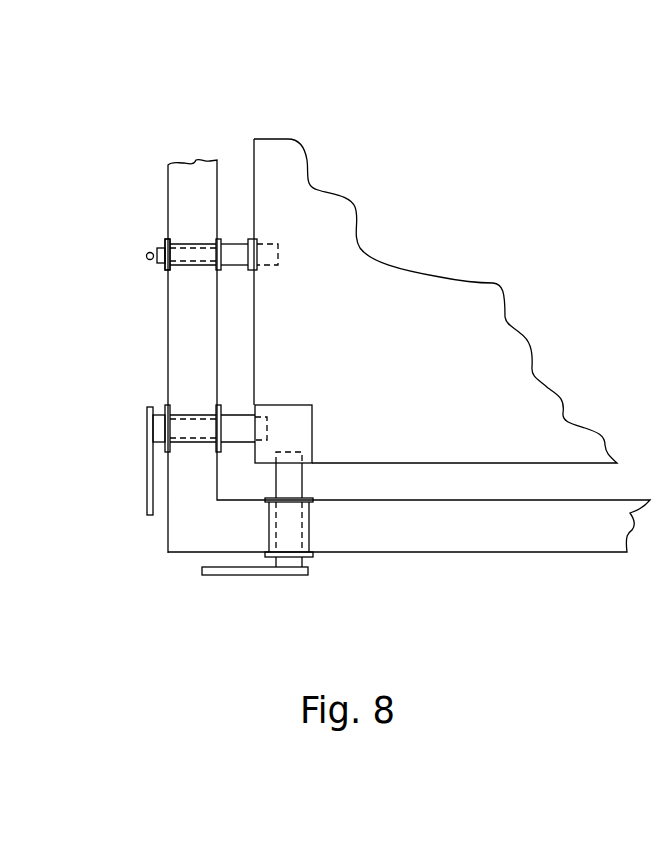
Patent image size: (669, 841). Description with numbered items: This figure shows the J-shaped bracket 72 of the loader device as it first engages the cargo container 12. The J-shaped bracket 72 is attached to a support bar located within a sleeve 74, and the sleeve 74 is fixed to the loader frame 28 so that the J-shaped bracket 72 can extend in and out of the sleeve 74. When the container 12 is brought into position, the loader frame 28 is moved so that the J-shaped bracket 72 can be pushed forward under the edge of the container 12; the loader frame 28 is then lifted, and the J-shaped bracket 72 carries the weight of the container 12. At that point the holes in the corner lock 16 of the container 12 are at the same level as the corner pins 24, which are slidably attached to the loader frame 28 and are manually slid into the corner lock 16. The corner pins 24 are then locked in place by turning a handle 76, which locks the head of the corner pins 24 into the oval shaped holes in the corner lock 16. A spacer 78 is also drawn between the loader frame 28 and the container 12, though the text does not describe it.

The cargo container 12 is at (463, 290).
The corner lock 16 is at (293, 408).
The corner pins 24 is at (243, 417).
The loader frame 28 is at (175, 536).
The J-shaped bracket 72 is at (160, 245).
The sleeve 74 is at (170, 275).
The handle 76 is at (148, 473).
The spacer 78 is at (232, 257).